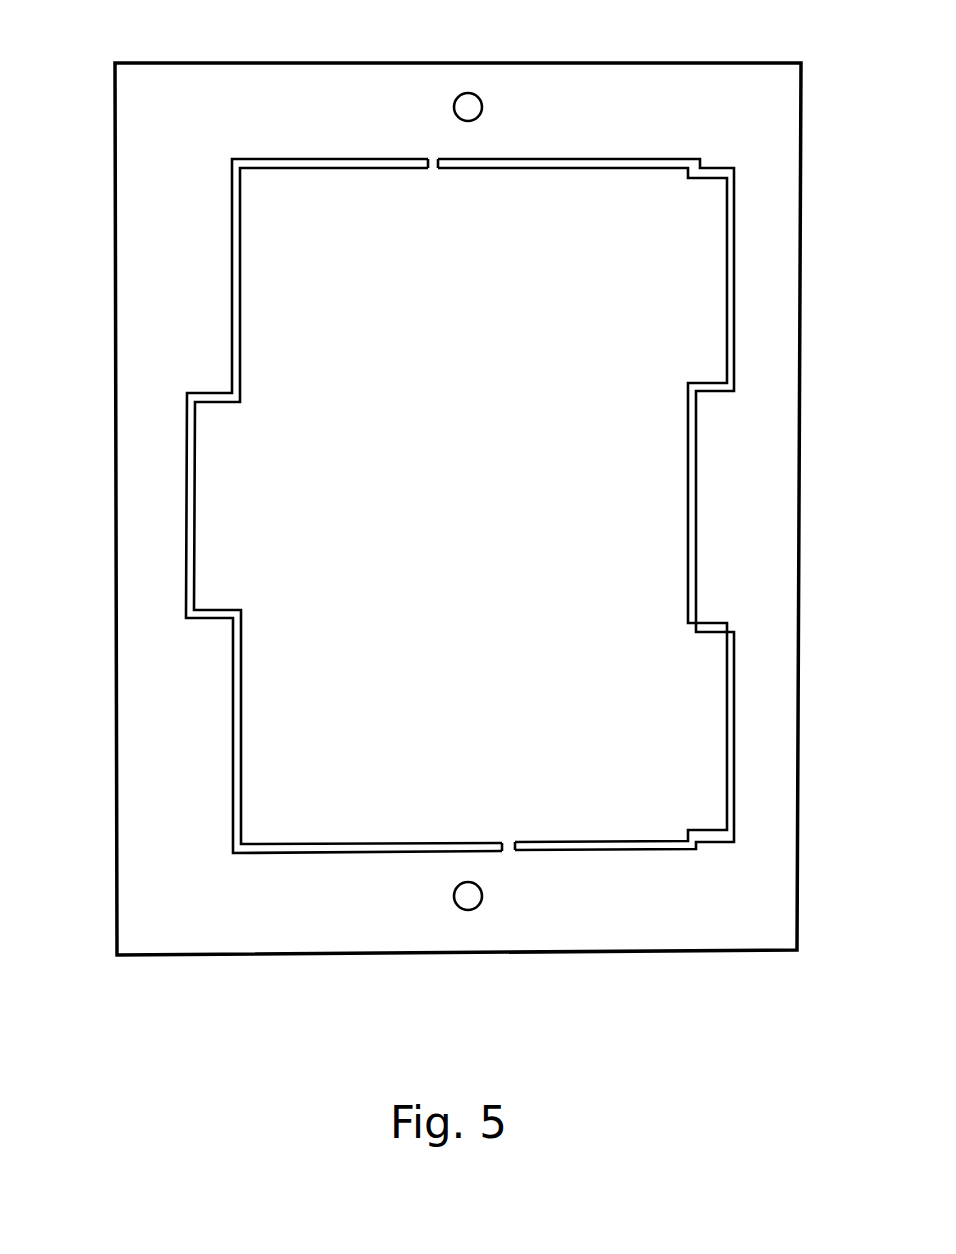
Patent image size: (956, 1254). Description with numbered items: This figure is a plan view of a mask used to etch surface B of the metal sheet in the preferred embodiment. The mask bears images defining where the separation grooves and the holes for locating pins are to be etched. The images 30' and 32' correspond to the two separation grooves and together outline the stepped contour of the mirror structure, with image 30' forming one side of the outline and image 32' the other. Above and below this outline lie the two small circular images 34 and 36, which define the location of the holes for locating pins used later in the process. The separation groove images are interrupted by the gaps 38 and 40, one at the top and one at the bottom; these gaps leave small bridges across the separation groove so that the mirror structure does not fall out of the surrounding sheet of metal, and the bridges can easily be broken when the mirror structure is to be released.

The image corresponding to separation groove 30' is at (655, 504).
The image corresponding to separation groove 32' is at (264, 506).
The image defining hole for locating pin 34 is at (467, 93).
The image defining hole for locating pin 36 is at (462, 909).
The gap 38 is at (432, 155).
The gap 40 is at (508, 852).